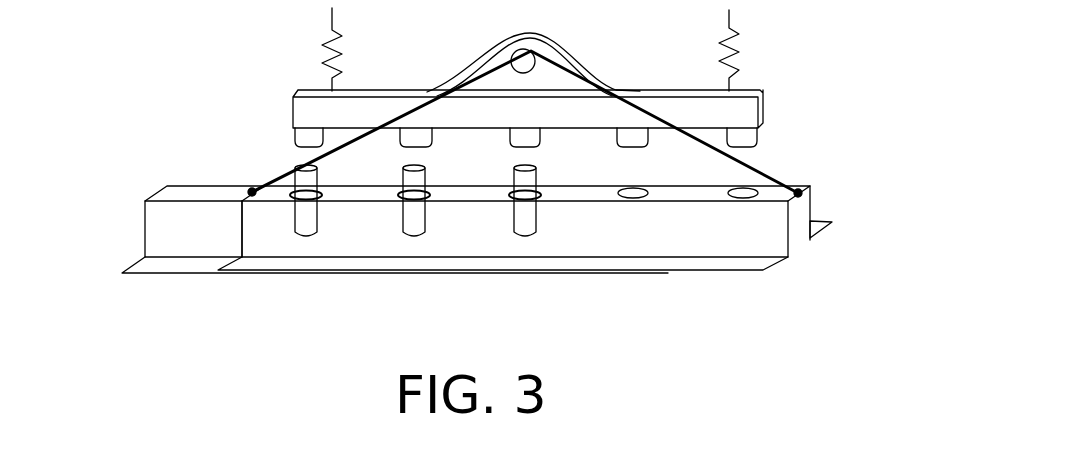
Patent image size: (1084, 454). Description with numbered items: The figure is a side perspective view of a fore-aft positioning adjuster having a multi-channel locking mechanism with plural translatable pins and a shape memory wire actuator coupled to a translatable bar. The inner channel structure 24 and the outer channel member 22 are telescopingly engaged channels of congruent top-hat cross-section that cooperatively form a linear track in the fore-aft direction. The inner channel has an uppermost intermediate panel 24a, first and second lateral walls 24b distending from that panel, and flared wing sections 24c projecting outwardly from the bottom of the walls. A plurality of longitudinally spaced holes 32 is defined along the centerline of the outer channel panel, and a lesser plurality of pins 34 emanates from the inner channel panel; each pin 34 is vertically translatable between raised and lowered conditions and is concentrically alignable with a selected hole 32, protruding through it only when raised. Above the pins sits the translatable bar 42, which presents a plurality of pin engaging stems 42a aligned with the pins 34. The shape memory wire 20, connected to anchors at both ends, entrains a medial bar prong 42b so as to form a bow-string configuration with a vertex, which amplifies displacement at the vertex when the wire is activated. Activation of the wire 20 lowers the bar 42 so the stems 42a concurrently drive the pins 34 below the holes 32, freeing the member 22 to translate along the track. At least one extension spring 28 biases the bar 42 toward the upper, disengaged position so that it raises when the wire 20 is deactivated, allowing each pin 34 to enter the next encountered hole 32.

The shape memory wire 20 is at (412, 107).
The outer channel member 22 is at (322, 272).
The inner channel structure 24 is at (484, 244).
The intermediate panel 24a is at (166, 189).
The lateral wall 24b is at (150, 214).
The flared wing section 24c is at (137, 268).
The extension spring 28 is at (330, 33).
The hole 32 is at (640, 198).
The pin 34 is at (425, 236).
The translatable bar 42 is at (768, 105).
The pin engaging stem 42a is at (295, 133).
The medial bar prong 42b is at (532, 50).